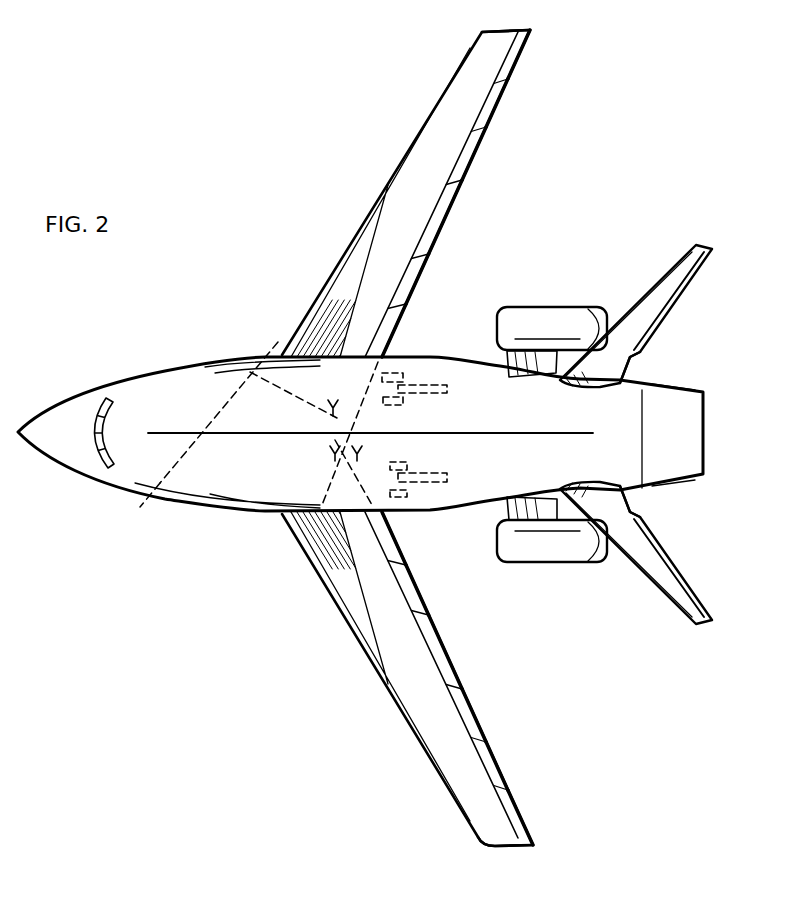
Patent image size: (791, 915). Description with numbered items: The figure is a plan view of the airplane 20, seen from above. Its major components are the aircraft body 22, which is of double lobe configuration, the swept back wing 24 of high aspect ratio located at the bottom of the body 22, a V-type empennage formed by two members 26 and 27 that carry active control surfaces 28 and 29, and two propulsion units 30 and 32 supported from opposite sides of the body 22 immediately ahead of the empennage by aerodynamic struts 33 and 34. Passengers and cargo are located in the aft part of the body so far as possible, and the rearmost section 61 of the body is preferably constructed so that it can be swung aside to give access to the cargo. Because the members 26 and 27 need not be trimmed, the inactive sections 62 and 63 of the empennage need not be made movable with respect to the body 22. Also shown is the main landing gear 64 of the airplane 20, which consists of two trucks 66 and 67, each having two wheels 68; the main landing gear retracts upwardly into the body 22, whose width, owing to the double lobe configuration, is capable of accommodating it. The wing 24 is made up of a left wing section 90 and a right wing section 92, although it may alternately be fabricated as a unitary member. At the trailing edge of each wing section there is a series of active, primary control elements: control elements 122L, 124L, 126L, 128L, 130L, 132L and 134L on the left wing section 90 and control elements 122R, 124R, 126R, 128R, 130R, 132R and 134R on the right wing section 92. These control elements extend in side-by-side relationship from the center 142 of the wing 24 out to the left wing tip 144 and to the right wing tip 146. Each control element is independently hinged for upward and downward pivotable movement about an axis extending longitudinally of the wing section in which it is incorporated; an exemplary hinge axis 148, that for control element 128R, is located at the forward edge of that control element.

The airplane 20 is at (147, 333).
The aircraft body 22 is at (151, 385).
The swept back wing 24 is at (322, 600).
The empennage member 26 is at (680, 563).
The empennage member 27 is at (688, 288).
The active control surface 28 is at (693, 587).
The active control surface 29 is at (673, 308).
The propulsion unit 30 is at (560, 517).
The propulsion unit 32 is at (548, 318).
The aerodynamic strut 33 is at (560, 553).
The aerodynamic strut 34 is at (553, 363).
The rearmost section of aircraft body 61 is at (693, 453).
The inactive section of empennage 62 is at (637, 498).
The inactive section of empennage 63 is at (627, 364).
The main landing gear 64 is at (422, 465).
The truck 66 is at (447, 392).
The truck 67 is at (447, 477).
The wheels 68 is at (331, 457).
The left wing section 90 is at (391, 666).
The right wing section 92 is at (417, 140).
The control element 122R is at (268, 346).
The control element 122L is at (292, 522).
The control element 124R is at (392, 322).
The control element 126R is at (410, 281).
The control element 128R is at (434, 230).
The control element 130R is at (478, 146).
The control element 132R is at (507, 91).
The control element 134R is at (523, 44).
The control element 124L is at (397, 550).
The control element 126L is at (417, 593).
The control element 128L is at (437, 635).
The control element 130L is at (477, 723).
The control element 132L is at (497, 772).
The control element 134L is at (523, 815).
The center of wing 142 is at (140, 507).
The left wing tip 144 is at (520, 850).
The right wing tip 146 is at (502, 27).
The hinge axis 148 is at (447, 172).